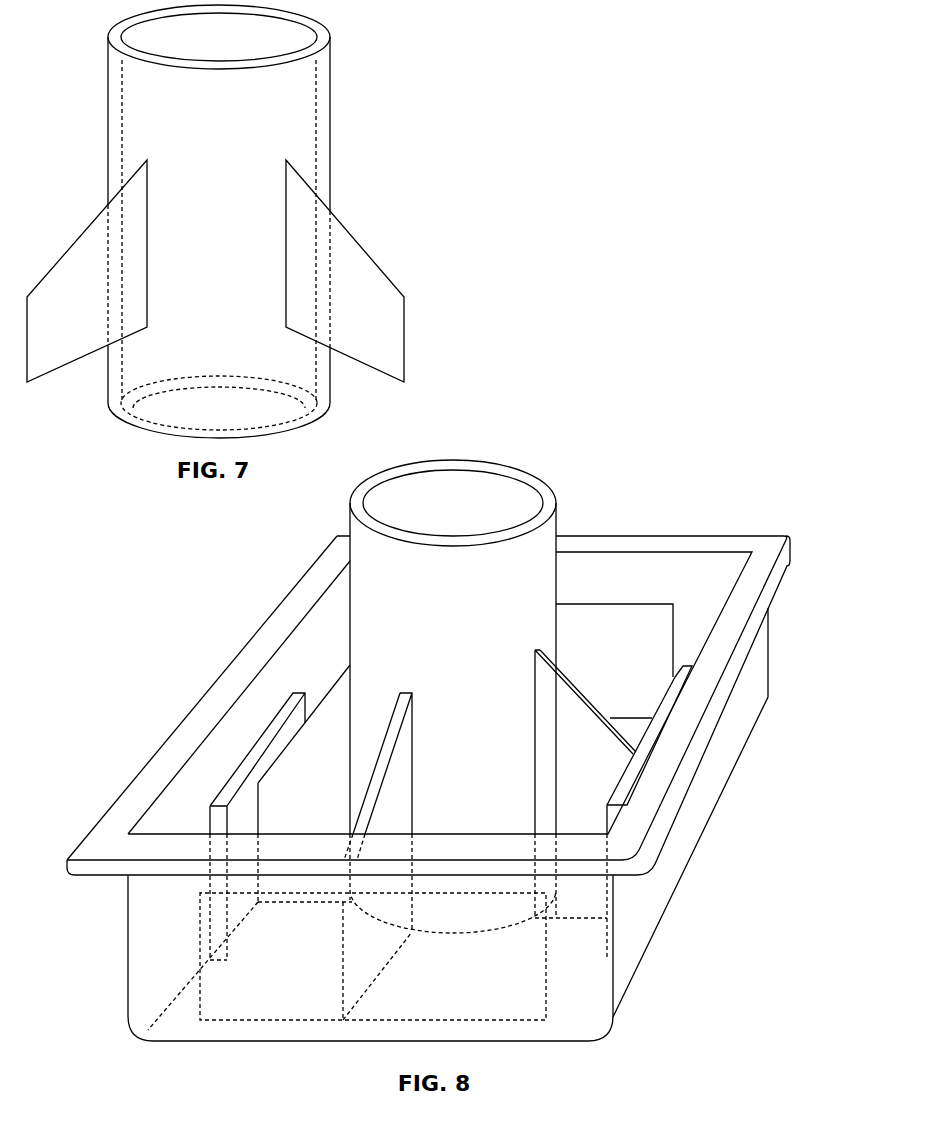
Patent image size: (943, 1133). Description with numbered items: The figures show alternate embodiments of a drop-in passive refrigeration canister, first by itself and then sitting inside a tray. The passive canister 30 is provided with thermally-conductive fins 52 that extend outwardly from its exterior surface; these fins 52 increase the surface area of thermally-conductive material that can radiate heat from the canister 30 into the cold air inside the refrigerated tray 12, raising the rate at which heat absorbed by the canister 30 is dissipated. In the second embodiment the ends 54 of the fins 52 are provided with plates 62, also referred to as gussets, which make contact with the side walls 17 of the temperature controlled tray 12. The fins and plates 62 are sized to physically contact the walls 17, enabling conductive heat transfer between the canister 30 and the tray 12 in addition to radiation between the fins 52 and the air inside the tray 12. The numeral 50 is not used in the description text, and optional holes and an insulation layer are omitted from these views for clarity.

In FIG. 8, the refrigerated tray 12 is at (743, 536).
In FIG. 8, the side walls 17 is at (325, 673).
In FIG. 8, the passive canister 30 is at (540, 478).
In FIG. 7, the cylindrical sleeve 50 is at (330, 90).
In FIG. 7, the thermally-conductive fins 52 is at (368, 253).
In FIG. 8, the thermally-conductive fins 52 is at (635, 787).
In FIG. 8, the ends of the fins 54 is at (660, 710).
In FIG. 8, the plates 62 is at (615, 603).